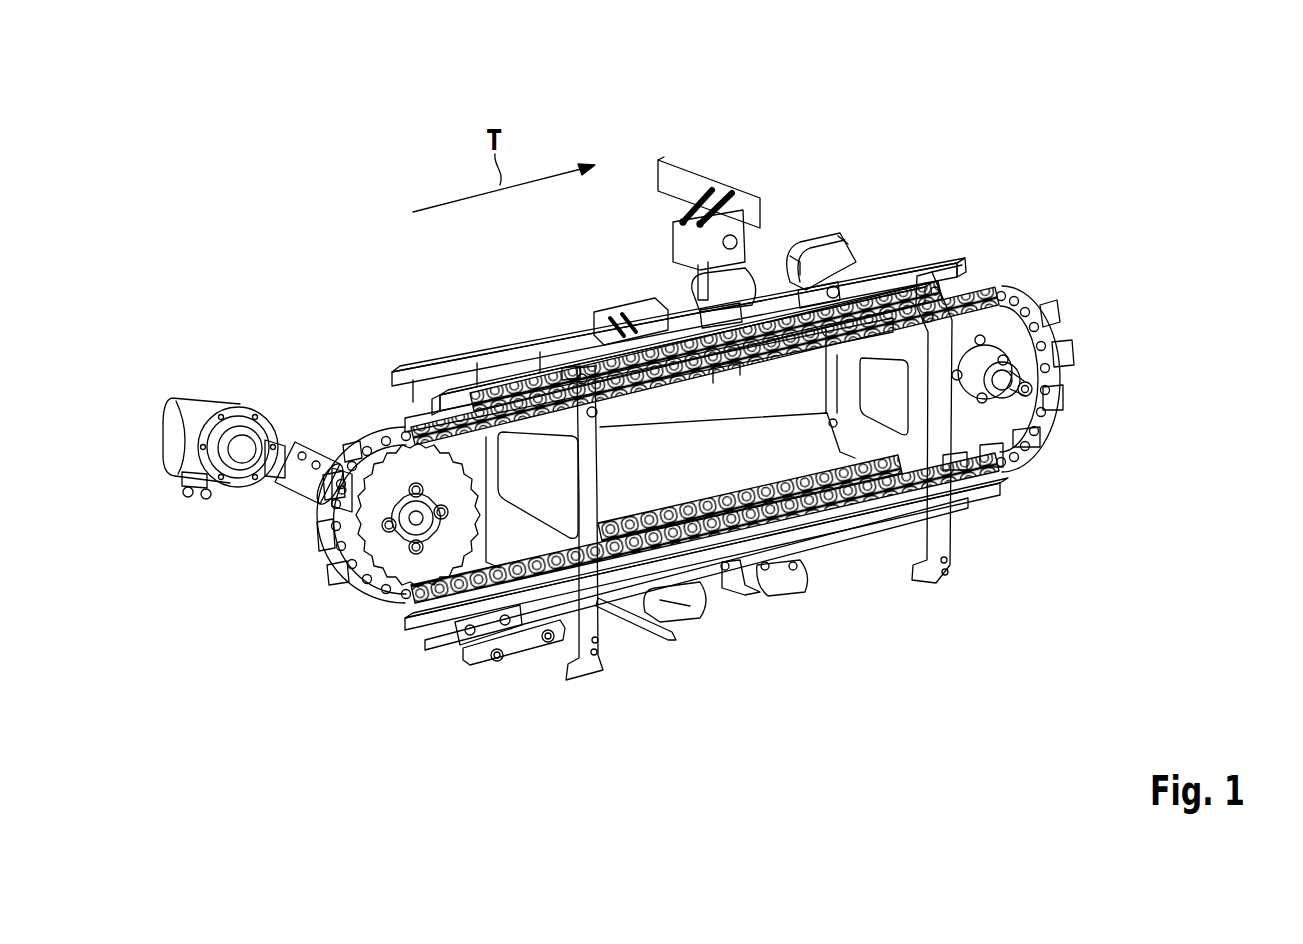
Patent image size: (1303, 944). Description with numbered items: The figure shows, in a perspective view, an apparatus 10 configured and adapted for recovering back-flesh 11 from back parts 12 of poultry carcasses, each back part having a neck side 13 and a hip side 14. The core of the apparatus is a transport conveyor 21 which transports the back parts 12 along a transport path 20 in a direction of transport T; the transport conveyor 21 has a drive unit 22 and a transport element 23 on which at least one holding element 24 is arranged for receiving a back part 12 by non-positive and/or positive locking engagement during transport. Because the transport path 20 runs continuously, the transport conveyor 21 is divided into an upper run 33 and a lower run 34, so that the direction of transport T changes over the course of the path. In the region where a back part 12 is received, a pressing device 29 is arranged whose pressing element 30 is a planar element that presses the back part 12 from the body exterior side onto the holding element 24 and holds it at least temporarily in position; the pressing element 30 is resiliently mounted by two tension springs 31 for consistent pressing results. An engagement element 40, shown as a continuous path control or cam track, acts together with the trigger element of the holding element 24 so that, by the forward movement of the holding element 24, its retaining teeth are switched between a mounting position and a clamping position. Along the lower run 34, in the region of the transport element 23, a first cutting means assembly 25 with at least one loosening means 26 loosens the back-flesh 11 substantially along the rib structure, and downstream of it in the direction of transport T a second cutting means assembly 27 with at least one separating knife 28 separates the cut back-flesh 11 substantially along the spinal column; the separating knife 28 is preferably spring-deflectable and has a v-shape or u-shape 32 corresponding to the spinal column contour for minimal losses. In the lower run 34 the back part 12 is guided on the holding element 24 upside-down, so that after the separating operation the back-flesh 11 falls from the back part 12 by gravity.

The apparatus 10 is at (978, 182).
The back-flesh 11 is at (700, 617).
The back part 12 is at (822, 250).
The neck side 13 is at (843, 232).
The hip side 14 is at (780, 256).
The transport path 20 is at (908, 276).
The transport conveyor 21 is at (310, 372).
The drive unit 22 is at (206, 400).
The transport element 23 is at (1006, 282).
The holding element 24 is at (603, 316).
The first cutting means assembly 25 is at (784, 614).
The loosening means 26 is at (735, 590).
The second cutting means assembly 27 is at (671, 650).
The separating knife 28 is at (652, 630).
The pressing device 29 is at (742, 167).
The pressing element 30 is at (688, 262).
The tension springs 31 is at (688, 199).
The v-shape or u-shape 32 is at (625, 634).
The upper run 33 is at (385, 333).
The lower run 34 is at (990, 550).
The engagement element 40 is at (467, 338).